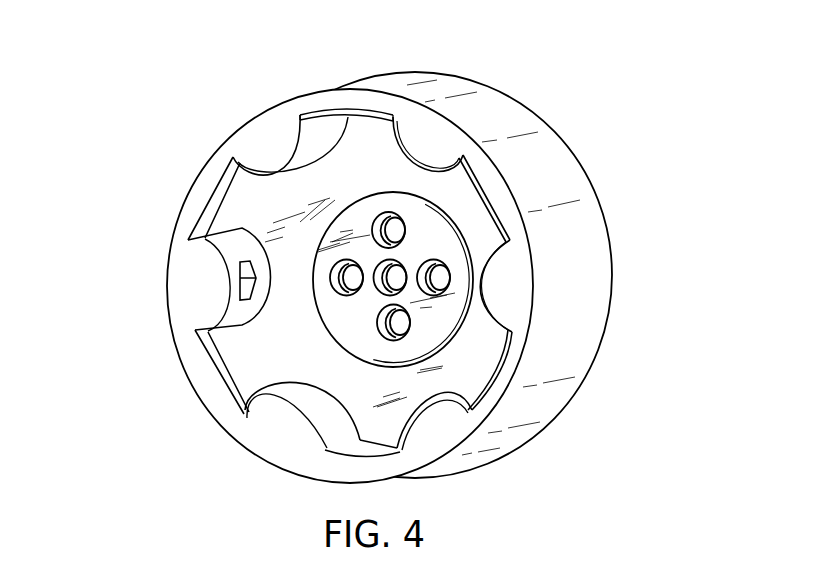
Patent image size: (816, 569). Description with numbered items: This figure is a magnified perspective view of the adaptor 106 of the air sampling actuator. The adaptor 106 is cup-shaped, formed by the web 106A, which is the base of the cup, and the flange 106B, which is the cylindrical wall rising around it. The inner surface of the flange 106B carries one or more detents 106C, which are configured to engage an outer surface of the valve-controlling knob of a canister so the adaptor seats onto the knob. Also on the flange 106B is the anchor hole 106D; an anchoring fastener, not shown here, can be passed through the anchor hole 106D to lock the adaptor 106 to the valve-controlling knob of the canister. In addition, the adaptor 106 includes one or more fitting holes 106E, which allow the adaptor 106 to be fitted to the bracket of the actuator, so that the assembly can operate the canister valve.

The adaptor 106 is at (597, 70).
The web 106A is at (268, 203).
The flange 106B is at (585, 219).
The detents 106C is at (198, 315).
The anchor hole 106D is at (238, 262).
The fitting holes 106E is at (442, 275).